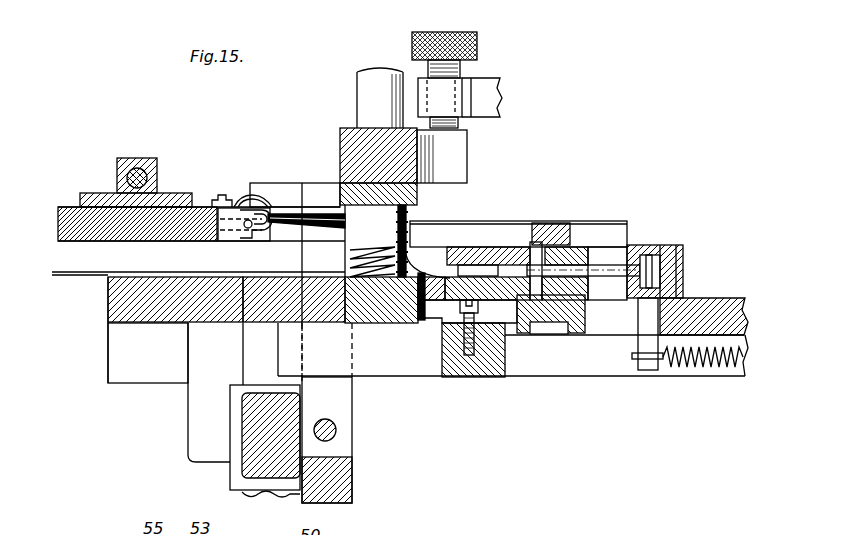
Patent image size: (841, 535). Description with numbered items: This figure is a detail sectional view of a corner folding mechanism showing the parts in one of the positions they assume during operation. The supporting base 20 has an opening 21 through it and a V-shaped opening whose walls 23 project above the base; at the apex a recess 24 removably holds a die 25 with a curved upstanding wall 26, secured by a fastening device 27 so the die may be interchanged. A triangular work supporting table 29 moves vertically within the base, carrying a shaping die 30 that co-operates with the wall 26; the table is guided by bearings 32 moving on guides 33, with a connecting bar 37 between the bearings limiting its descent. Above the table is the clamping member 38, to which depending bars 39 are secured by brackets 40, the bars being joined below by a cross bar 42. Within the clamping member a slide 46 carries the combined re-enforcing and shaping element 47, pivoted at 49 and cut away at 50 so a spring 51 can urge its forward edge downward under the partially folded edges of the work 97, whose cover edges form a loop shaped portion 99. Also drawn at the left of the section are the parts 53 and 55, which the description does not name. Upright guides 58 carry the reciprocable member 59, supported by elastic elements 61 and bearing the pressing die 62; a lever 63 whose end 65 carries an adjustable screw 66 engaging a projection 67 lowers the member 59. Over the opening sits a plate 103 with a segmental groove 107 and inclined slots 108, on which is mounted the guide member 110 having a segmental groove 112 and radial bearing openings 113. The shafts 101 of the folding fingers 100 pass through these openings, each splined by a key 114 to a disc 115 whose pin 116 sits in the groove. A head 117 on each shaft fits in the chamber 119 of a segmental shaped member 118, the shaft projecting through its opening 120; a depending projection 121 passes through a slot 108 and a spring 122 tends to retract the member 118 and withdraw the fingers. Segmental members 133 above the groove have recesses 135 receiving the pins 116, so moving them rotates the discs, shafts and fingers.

The supporting base 20 is at (672, 376).
The opening 21 is at (578, 368).
The walls 23 is at (118, 365).
The recess 24 is at (490, 352).
The die 25 is at (440, 318).
The curved upstanding wall 26 is at (398, 300).
The fastening device 27 is at (466, 362).
The work supporting table 29 is at (108, 310).
The shaping die 30 is at (360, 300).
The bearings 32 is at (196, 423).
The guides 33 is at (270, 496).
The connecting bar 37 is at (250, 455).
The clamping member 38 is at (302, 190).
The depending bars 39 is at (332, 292).
The brackets 40 is at (325, 195).
The cross bar 42 is at (352, 482).
The slide 46 is at (64, 236).
The combined re-enforcing and shaping element 47 is at (276, 232).
The pivot 49 is at (246, 228).
The cut away portion 50 is at (252, 238).
The spring 51 is at (255, 196).
The pin 53 is at (120, 160).
The block 55 is at (145, 160).
The upright guides 58 is at (362, 86).
The reciprocable member 59 is at (348, 130).
The elastic elements 61 is at (412, 210).
The die 62 is at (420, 200).
The lever 63 is at (500, 106).
The end of lever 65 is at (488, 83).
The adjustable screw or bolt 66 is at (450, 34).
The projection 67 is at (470, 152).
The work 97 is at (72, 277).
The loop shaped portion 99 is at (400, 262).
The fingers 100 is at (488, 268).
The shafts 101 is at (608, 262).
The plate 103 is at (728, 302).
The segmental groove 107 is at (556, 334).
The slots 108 is at (628, 320).
The guide member 110 is at (600, 246).
The segmental groove 112 is at (530, 305).
The bearing openings 113 is at (468, 247).
The key or feather 114 is at (622, 266).
The disc 115 is at (536, 248).
The lug or pin 116 is at (556, 225).
The disc or head 117 is at (686, 250).
The segmental shaped member 118 is at (686, 268).
The chamber 119 is at (660, 255).
The opening 120 is at (628, 292).
The depending projection 121 is at (690, 307).
The spring 122 is at (702, 368).
The segmental shaped members 133 is at (574, 247).
The recesses 135 is at (582, 250).